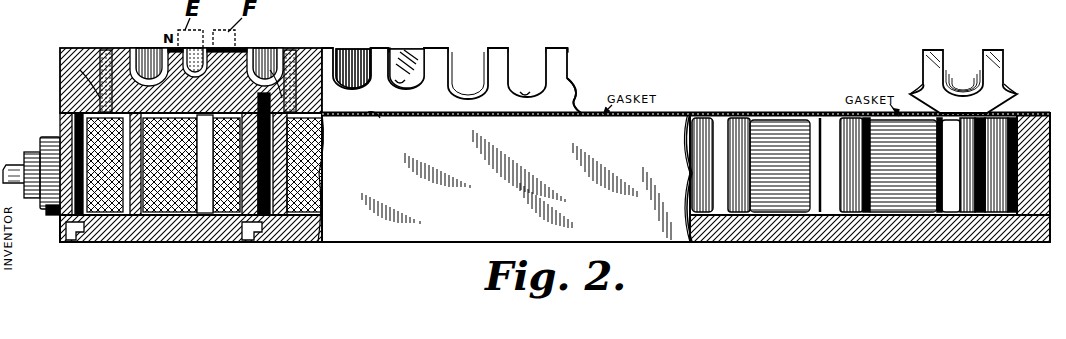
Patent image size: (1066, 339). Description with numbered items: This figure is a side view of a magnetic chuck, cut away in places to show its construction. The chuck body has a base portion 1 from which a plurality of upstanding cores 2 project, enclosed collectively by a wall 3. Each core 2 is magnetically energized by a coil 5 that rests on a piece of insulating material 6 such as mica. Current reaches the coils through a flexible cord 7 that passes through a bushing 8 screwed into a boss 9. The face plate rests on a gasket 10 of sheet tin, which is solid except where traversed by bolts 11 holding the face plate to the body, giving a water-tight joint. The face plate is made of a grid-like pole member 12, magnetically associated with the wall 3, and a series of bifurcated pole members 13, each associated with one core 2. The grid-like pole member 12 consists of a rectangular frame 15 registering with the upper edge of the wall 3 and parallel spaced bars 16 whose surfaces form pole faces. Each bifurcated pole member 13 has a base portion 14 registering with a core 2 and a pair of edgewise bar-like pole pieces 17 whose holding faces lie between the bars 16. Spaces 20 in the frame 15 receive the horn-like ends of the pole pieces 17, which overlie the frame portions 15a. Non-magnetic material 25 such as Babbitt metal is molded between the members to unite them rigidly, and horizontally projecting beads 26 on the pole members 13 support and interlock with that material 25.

The base portion 1 is at (243, 243).
The upstanding core 2 is at (110, 243).
The wall 3 is at (1050, 168).
The coil 5 is at (207, 243).
The piece of insulating material 6 is at (173, 243).
The flexible cord 7 is at (12, 166).
The bushing 8 is at (33, 156).
The boss 9 is at (53, 210).
The gasket 10 is at (595, 117).
The bolt 11 is at (72, 243).
The grid-like pole member 12 is at (580, 79).
The bifurcated pole member 13 is at (958, 76).
The base portion 14 is at (320, 134).
The rectangular frame 15 is at (61, 48).
The frame portion 15a is at (528, 88).
The bar 16 is at (152, 48).
The pole piece 17 is at (140, 49).
The space 20 is at (467, 60).
The non-magnetic material 25 is at (103, 49).
The bead 26 is at (104, 98).